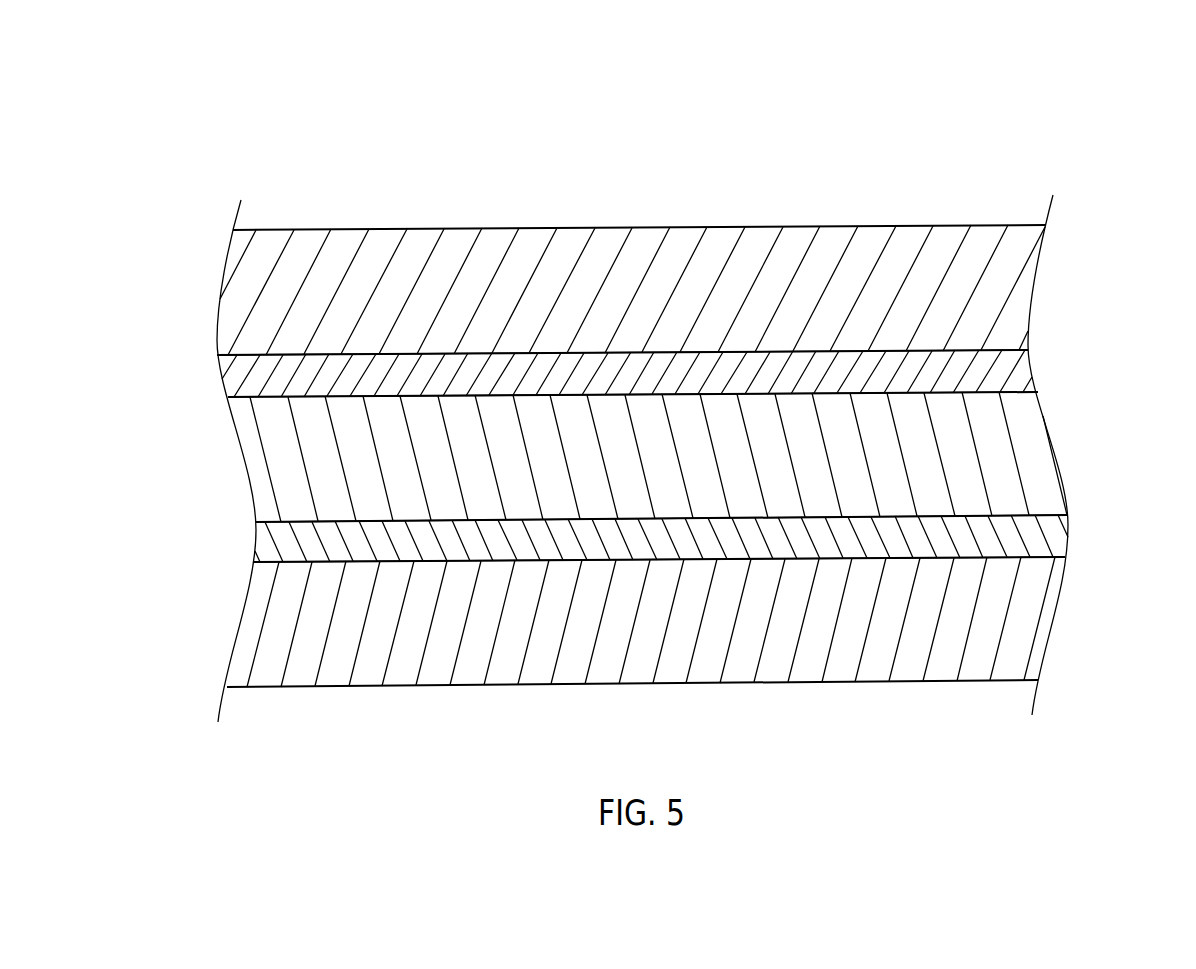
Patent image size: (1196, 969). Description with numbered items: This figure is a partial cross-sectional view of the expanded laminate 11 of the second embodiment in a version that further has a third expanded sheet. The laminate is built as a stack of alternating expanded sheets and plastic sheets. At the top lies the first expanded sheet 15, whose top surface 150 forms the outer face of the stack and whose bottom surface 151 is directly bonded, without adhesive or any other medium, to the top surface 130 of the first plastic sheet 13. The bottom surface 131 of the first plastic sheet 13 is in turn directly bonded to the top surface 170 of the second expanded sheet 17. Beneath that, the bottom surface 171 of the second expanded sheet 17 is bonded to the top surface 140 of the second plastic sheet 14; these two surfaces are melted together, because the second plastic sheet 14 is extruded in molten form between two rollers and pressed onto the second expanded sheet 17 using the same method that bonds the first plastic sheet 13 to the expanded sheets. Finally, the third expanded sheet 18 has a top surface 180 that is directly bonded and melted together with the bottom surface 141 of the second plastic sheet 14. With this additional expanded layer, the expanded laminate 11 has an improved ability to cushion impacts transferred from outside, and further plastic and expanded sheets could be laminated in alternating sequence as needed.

The expanded laminate 11 is at (902, 145).
The first expanded sheet 15 is at (265, 262).
The top surface of the first expanded sheet 150 is at (1000, 225).
The bottom surface of the first expanded sheet 151 is at (1023, 348).
The first plastic sheet 13 is at (265, 370).
The top surface of the first plastic sheet 130 is at (1000, 350).
The bottom surface of the first plastic sheet 131 is at (1038, 395).
The second expanded sheet 17 is at (267, 475).
The top surface of the second expanded sheet 170 is at (1023, 392).
The bottom surface of the second expanded sheet 171 is at (1055, 518).
The second plastic sheet 14 is at (260, 548).
The top surface of the second plastic sheet 140 is at (1040, 515).
The bottom surface of the second plastic sheet 141 is at (1030, 557).
The third expanded sheet 18 is at (248, 638).
The top surface of the third expanded sheet 180 is at (1050, 556).